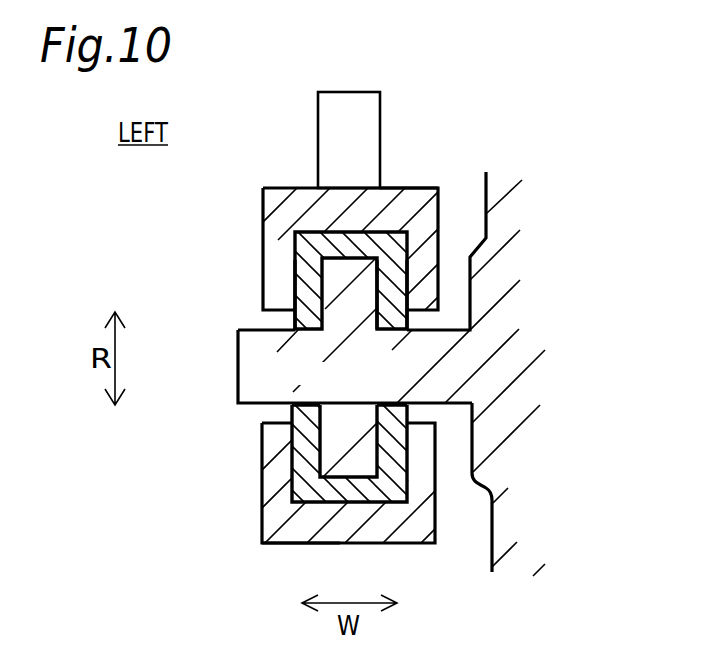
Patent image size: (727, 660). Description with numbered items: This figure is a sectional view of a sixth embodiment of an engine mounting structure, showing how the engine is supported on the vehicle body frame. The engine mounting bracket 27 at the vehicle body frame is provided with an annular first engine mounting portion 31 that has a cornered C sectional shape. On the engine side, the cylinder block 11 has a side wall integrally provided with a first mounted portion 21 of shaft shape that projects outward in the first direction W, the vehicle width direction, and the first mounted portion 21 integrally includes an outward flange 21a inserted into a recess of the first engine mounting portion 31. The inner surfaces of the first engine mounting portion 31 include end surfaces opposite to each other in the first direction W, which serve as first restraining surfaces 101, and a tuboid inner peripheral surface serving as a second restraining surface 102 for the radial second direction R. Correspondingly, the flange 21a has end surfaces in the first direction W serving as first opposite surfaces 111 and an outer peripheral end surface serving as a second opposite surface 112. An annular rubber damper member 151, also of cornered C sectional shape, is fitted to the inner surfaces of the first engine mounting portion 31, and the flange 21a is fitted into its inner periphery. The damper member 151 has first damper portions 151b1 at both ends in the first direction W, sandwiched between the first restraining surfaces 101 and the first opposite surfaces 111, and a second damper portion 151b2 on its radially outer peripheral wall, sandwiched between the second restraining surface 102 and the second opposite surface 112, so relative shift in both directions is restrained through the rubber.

The cylinder block 11 is at (577, 480).
The first mounted portion 21 is at (264, 367).
The outward flange 21a is at (352, 425).
The engine mounting bracket 27 is at (338, 137).
The first engine mounting portion 31 is at (261, 240).
The first restraining surfaces 101 is at (293, 270).
The second restraining surface 102 is at (407, 207).
The first opposite surfaces 111 is at (376, 290).
The second opposite surface 112 is at (346, 265).
The damper member 151 is at (372, 494).
The first damper portions 151b1 is at (303, 450).
The second damper portion 151b2 is at (265, 545).